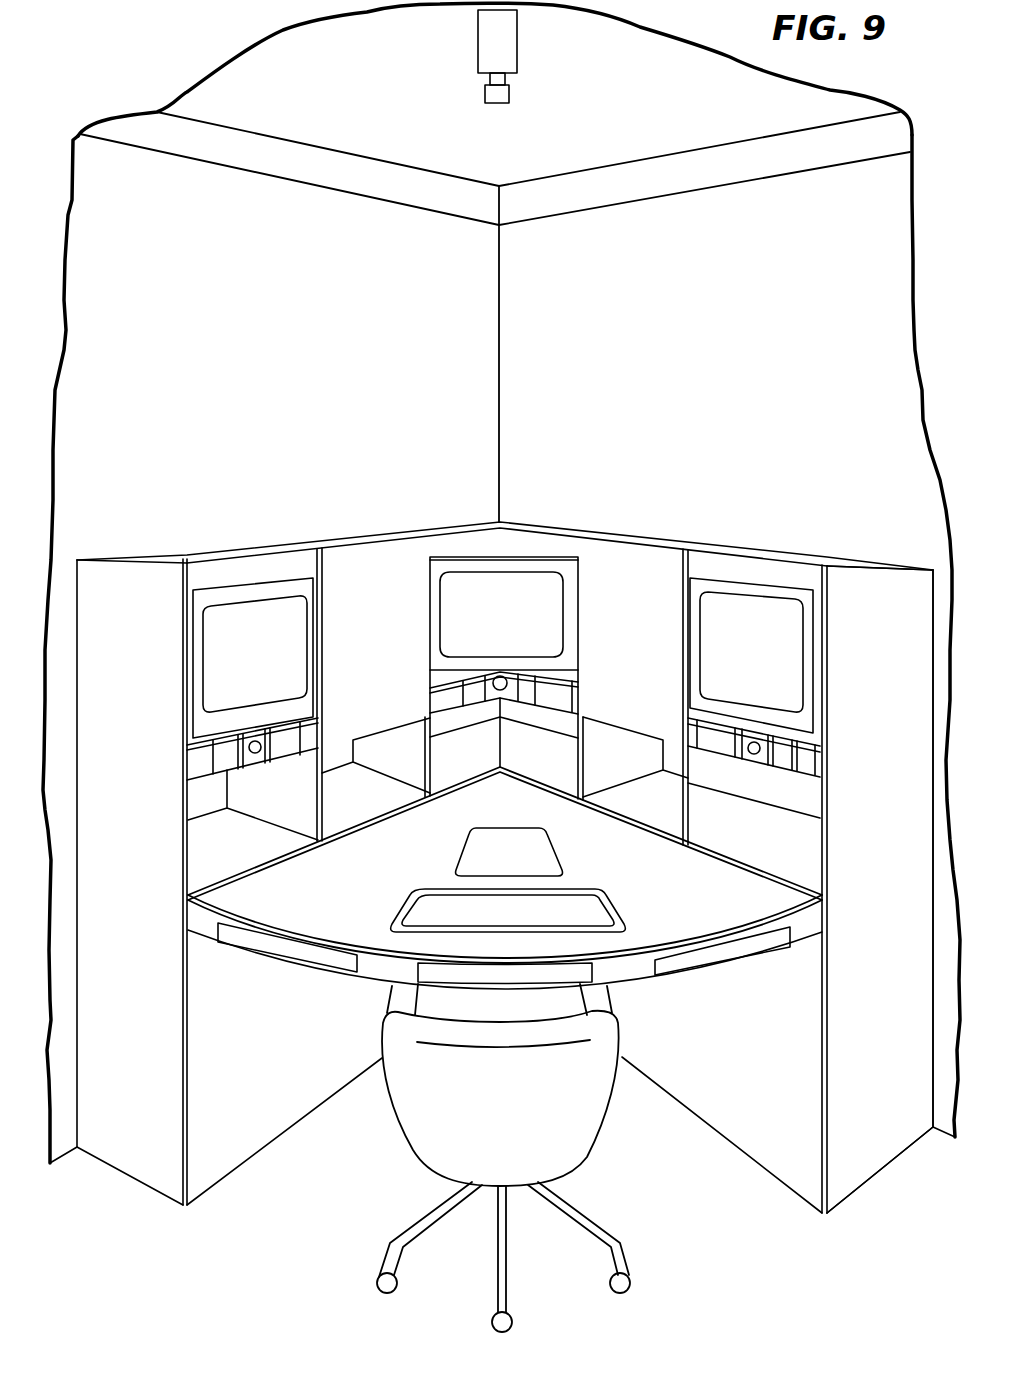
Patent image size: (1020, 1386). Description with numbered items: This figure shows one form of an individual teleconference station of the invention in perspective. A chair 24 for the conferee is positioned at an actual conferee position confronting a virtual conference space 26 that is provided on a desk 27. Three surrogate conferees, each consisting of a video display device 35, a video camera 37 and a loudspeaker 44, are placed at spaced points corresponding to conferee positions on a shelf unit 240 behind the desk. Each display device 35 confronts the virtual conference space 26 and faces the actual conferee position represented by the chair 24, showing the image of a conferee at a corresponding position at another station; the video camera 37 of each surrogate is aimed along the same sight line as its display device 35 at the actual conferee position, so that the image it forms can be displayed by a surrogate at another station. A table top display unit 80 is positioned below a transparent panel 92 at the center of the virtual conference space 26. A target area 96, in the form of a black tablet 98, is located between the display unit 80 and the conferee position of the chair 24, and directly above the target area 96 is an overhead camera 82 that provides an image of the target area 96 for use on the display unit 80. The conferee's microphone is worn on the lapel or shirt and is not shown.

The chair 24 is at (593, 1098).
The virtual conference space 26 is at (418, 877).
The desk 27 is at (723, 922).
The video display device 35 is at (264, 648).
The video camera 37 is at (257, 741).
The loudspeaker 44 is at (229, 757).
The table top display unit 80 is at (512, 847).
The overhead camera 82 is at (513, 50).
The transparent panel 92 is at (478, 847).
The target area 96 is at (605, 922).
The black tablet 98 is at (538, 886).
The shelf unit 240 is at (863, 580).